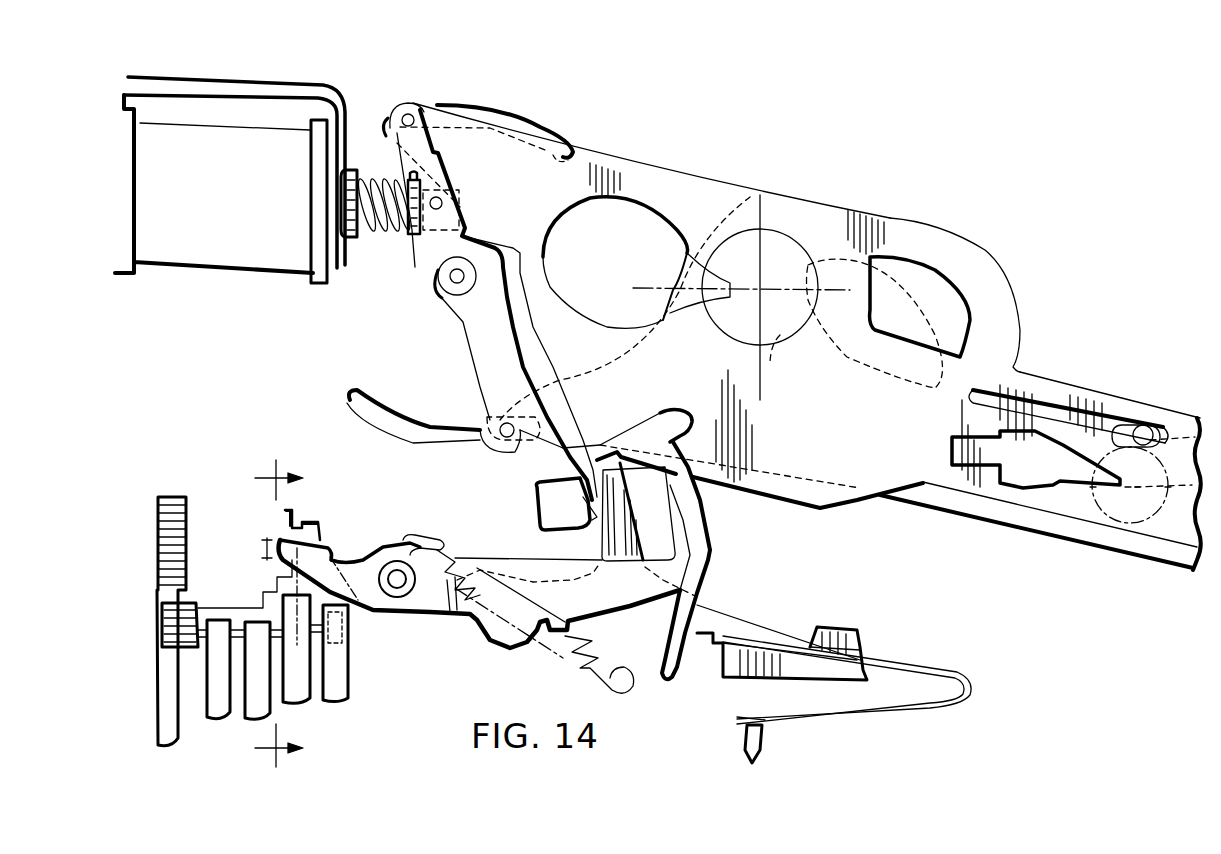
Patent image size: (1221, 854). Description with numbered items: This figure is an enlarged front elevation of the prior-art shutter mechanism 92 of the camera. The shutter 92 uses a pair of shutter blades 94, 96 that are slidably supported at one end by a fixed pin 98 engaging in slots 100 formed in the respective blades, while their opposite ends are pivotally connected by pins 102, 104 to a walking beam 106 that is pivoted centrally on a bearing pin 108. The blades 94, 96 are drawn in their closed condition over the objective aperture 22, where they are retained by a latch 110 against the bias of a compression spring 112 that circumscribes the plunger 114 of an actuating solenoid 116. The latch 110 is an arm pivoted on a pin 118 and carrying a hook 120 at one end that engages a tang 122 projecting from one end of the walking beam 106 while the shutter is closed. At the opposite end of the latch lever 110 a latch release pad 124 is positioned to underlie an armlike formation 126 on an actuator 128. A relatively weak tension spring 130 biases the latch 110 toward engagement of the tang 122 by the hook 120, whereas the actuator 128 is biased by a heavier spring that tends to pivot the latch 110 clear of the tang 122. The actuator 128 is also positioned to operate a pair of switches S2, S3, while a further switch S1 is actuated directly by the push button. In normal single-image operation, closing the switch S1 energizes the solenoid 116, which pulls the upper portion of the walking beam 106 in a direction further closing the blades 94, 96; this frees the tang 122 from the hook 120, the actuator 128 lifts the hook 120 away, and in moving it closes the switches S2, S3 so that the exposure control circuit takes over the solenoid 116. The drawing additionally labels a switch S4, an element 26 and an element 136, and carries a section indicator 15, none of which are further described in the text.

The objective aperture 22 is at (812, 362).
The shaft 26 is at (1122, 515).
The shutter mechanism 92 is at (722, 190).
The shutter blade 94 is at (968, 240).
The shutter blade 96 is at (643, 162).
The fixed pin 98 is at (1145, 423).
The slots 100 is at (1047, 412).
The pin 102 is at (500, 420).
The pin 104 is at (418, 104).
The walking beam 106 is at (520, 338).
The bearing pin 108 is at (452, 278).
The latch 110 is at (488, 552).
The compression spring 112 is at (364, 240).
The plunger 114 is at (398, 243).
The actuating solenoid 116 is at (233, 270).
The pin 118 is at (403, 595).
The hook 120 is at (540, 512).
The tang 122 is at (588, 522).
The latch release pad 124 is at (345, 528).
The armlike formation 126 is at (271, 515).
The actuator 128 is at (318, 520).
The tension spring 130 is at (548, 664).
The tab 136 is at (283, 514).
The section line 15 is at (292, 613).
The switch S1 is at (255, 722).
The switch S2 is at (296, 705).
The switch S3 is at (335, 707).
The switch finger S4 is at (218, 722).